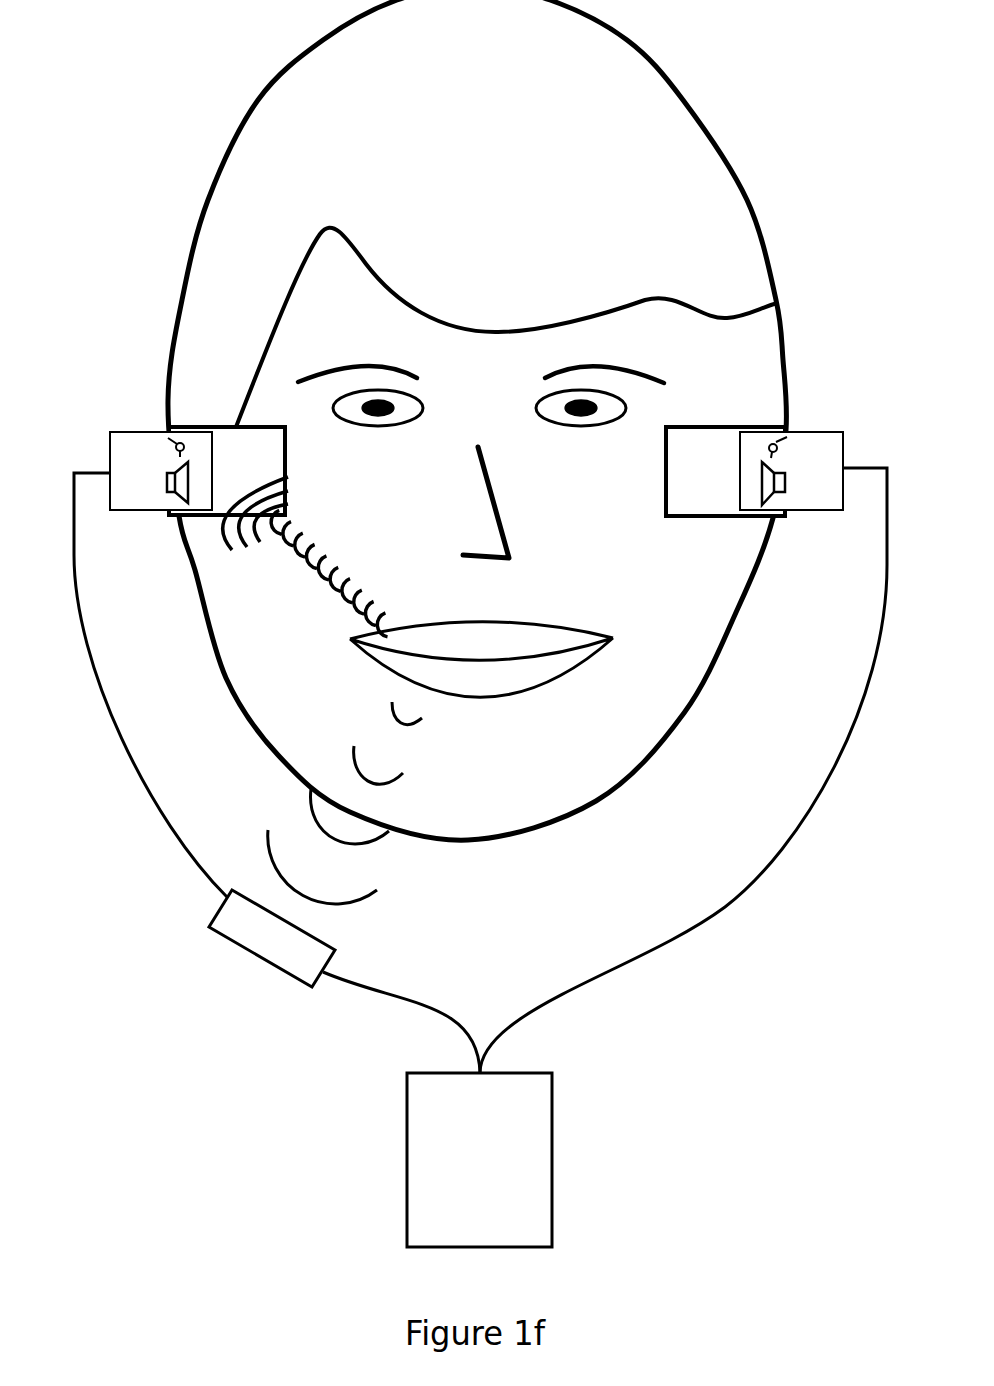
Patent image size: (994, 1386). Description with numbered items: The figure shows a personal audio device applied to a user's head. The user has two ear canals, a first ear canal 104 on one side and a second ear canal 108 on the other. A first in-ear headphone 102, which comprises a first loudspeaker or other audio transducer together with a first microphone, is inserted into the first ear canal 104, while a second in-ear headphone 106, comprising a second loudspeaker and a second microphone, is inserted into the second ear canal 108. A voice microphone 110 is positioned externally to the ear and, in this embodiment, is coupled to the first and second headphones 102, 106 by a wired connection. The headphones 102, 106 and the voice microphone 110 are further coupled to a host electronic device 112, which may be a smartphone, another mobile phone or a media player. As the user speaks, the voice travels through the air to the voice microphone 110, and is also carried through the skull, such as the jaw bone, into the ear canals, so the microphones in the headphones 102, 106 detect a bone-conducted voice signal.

The first in-ear headphone 102 is at (124, 428).
The first ear canal 104 is at (285, 457).
The second in-ear headphone 106 is at (828, 432).
The second ear canal 108 is at (666, 476).
The voice microphone 110 is at (261, 952).
The host electronic device 112 is at (407, 1118).